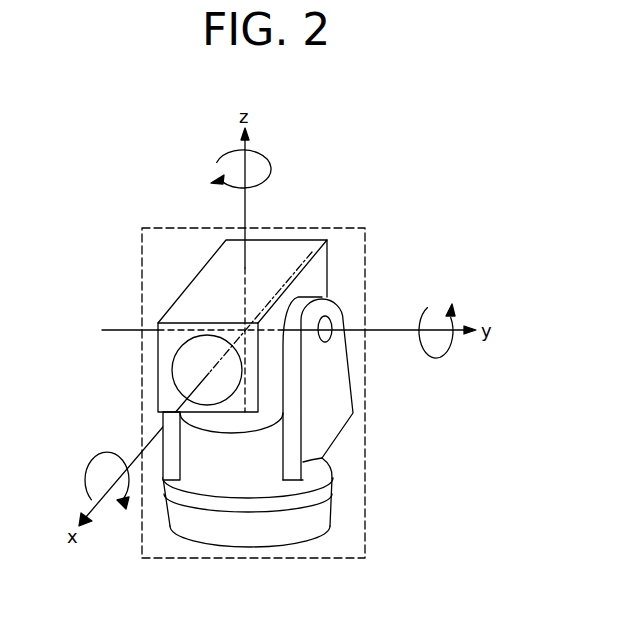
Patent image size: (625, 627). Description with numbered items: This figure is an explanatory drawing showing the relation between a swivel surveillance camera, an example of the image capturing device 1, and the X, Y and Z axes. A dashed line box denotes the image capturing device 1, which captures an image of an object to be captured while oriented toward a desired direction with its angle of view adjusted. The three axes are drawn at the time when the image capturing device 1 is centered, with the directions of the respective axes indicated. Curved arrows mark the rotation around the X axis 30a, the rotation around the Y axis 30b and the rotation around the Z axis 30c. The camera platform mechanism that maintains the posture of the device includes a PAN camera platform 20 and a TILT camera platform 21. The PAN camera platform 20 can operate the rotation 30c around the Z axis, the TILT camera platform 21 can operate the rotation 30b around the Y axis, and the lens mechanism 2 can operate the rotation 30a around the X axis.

The image capturing device 1 is at (333, 227).
The lens mechanism 2 is at (176, 353).
The PAN camera platform 20 is at (303, 533).
The TILT camera platform 21 is at (338, 320).
The rotation around the X axis 30a is at (87, 462).
The rotation around the Y axis 30b is at (427, 357).
The rotation around the Z axis 30c is at (270, 165).